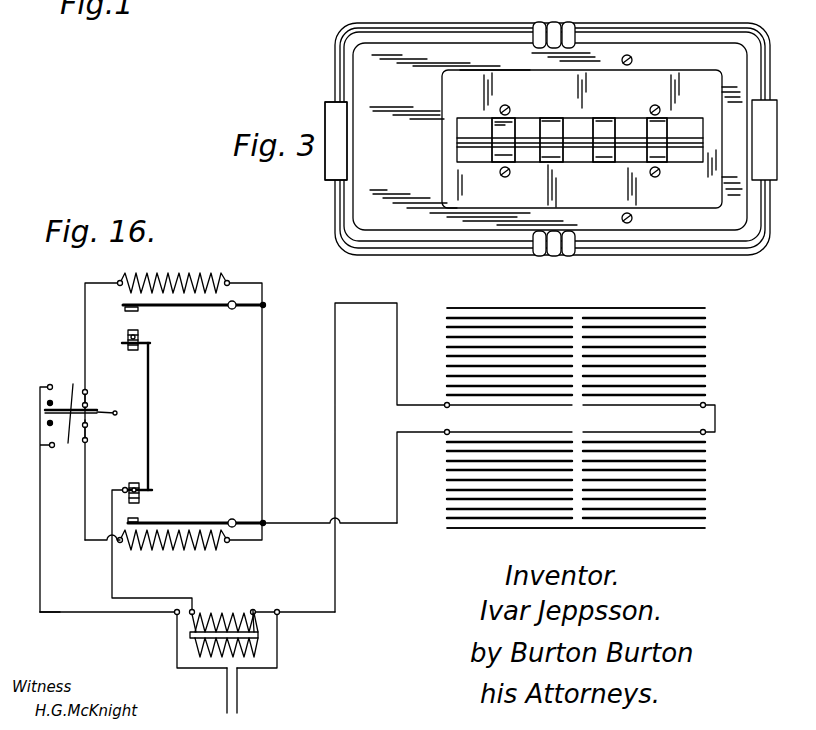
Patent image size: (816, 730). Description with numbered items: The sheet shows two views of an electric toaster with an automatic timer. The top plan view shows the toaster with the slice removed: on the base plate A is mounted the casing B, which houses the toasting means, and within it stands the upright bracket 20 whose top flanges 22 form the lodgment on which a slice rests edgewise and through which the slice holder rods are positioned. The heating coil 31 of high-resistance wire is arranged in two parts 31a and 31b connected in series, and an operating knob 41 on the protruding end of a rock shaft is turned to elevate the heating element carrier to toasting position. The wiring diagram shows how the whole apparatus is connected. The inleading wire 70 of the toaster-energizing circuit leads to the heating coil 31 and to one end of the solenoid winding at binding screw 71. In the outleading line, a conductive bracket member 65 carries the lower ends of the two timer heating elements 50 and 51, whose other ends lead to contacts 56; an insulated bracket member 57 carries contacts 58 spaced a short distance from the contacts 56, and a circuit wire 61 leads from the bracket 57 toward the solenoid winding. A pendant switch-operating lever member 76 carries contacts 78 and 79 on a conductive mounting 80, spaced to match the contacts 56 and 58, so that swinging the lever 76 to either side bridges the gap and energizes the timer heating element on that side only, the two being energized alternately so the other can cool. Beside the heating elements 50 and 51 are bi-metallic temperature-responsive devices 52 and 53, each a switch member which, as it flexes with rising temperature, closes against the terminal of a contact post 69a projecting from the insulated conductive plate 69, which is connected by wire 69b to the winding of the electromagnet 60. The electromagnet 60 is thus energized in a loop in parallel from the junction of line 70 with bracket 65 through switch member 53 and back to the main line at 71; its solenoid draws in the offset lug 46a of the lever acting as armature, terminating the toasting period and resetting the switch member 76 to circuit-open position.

In FIG. 3, the base plate A is at (692, 242).
In FIG. 3, the casing member B is at (705, 73).
In FIG. 3, the operating knob 41 is at (327, 112).
In FIG. 3, the upright bracket 20 is at (457, 148).
In FIG. 3, the top flanges 22 is at (553, 128).
In FIG. 16, the heating coil 31 is at (572, 426).
In FIG. 16, the heating coil first part 31a is at (573, 307).
In FIG. 16, the heating coil second part 31b is at (522, 529).
In FIG. 16, the offset lug 46a is at (259, 635).
In FIG. 16, the timer heating element 50 is at (198, 272).
In FIG. 16, the timer heating element 51 is at (192, 546).
In FIG. 16, the temperature-responsive device 52 is at (193, 307).
In FIG. 16, the temperature-responsive device 53 is at (195, 523).
In FIG. 16, the contact 56 is at (86, 390).
In FIG. 16, the bracket member 57 is at (38, 422).
In FIG. 16, the contacts 58 is at (50, 385).
In FIG. 16, the electromagnet 60 is at (222, 612).
In FIG. 16, the circuit wire 61 is at (78, 611).
In FIG. 16, the conductive bracket member 65 is at (263, 370).
In FIG. 16, the conductive plate 69 is at (150, 373).
In FIG. 16, the contact post 69a is at (139, 337).
In FIG. 16, the wire 69b is at (113, 570).
In FIG. 16, the inleading wire 70 is at (396, 343).
In FIG. 16, the binding screw 71 is at (255, 610).
In FIG. 16, the switch-operating lever member 76 is at (100, 410).
In FIG. 16, the contact 78 is at (87, 404).
In FIG. 16, the contact 79 is at (50, 403).
In FIG. 16, the conductive mounting 80 is at (71, 414).